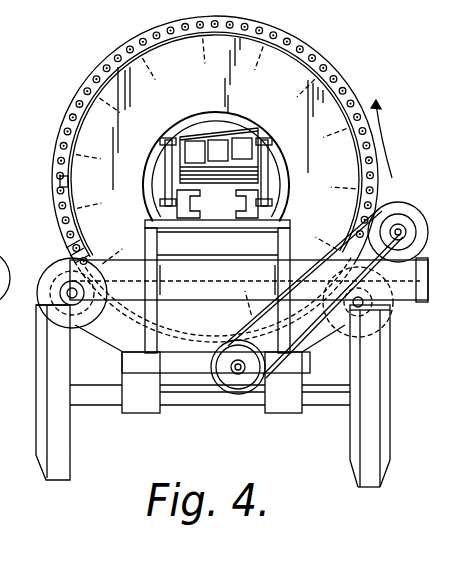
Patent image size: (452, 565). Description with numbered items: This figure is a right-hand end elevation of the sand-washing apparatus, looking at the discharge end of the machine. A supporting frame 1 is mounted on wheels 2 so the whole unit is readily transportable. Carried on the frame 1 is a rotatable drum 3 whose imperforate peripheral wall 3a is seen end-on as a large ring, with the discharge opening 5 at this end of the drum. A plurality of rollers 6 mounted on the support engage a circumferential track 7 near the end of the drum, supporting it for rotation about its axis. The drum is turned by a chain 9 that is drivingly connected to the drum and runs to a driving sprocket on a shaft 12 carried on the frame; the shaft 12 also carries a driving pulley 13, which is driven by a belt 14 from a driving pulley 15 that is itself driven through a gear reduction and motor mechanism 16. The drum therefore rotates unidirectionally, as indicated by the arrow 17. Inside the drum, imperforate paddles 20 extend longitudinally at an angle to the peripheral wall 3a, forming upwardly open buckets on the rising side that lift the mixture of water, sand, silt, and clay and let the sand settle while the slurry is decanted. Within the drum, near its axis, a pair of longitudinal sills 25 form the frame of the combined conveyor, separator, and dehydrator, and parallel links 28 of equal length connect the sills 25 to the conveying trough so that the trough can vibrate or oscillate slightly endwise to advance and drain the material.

The supporting frame 1 is at (190, 376).
The wheels 2 is at (45, 482).
The rotatable drum 3 is at (52, 211).
The imperforate peripheral wall 3a is at (58, 184).
The discharge opening 5 is at (228, 134).
The rollers 6 is at (2, 254).
The circumferential tracks 7 is at (305, 63).
The chain 9 is at (350, 92).
The shaft 12 is at (236, 375).
The driving pulley 13 is at (247, 390).
The belt 14 is at (296, 346).
The driving pulley 15 is at (411, 216).
The gear reduction and motor mechanism 16 is at (406, 202).
The arrow 17 is at (385, 122).
The imperforate paddles 20 is at (128, 101).
The longitudinal sills 25 is at (238, 199).
The links 28 is at (162, 181).